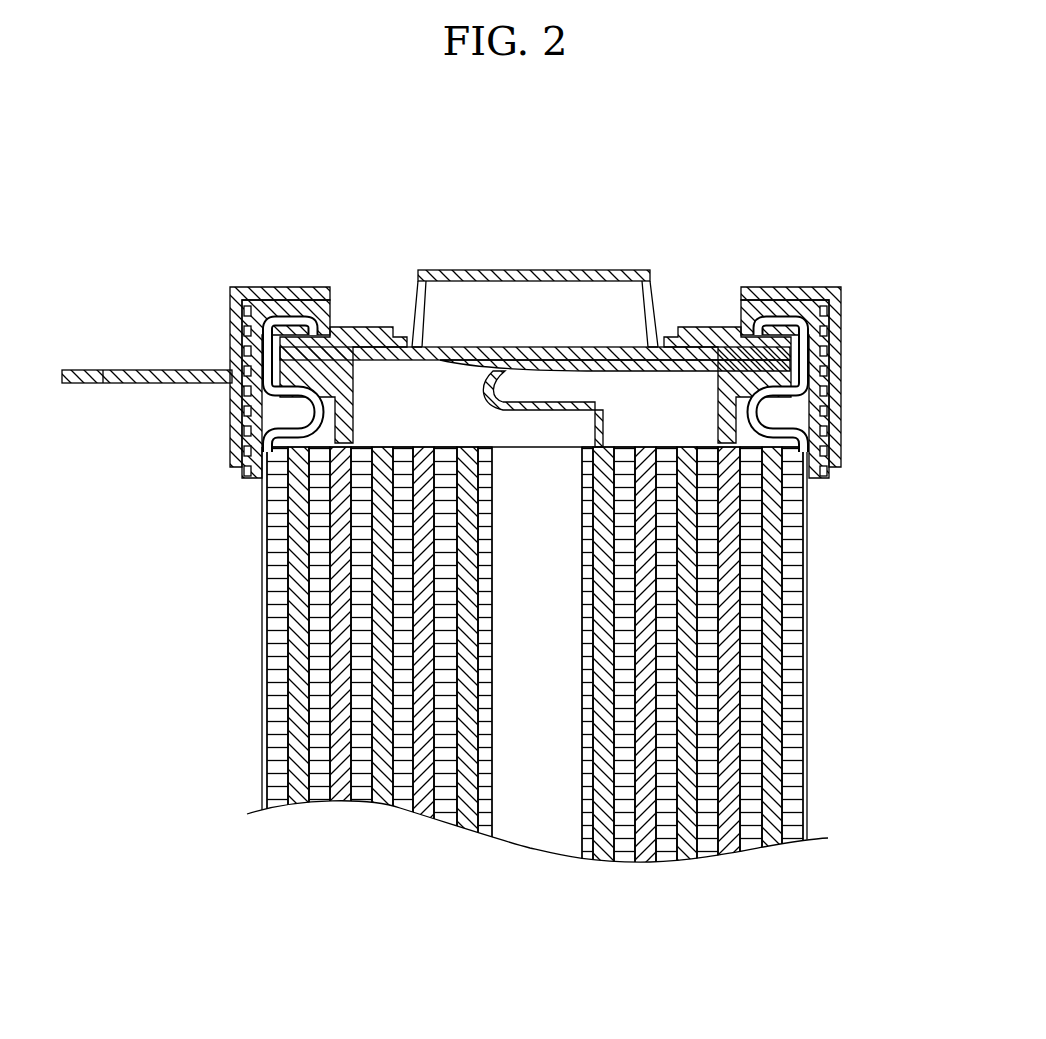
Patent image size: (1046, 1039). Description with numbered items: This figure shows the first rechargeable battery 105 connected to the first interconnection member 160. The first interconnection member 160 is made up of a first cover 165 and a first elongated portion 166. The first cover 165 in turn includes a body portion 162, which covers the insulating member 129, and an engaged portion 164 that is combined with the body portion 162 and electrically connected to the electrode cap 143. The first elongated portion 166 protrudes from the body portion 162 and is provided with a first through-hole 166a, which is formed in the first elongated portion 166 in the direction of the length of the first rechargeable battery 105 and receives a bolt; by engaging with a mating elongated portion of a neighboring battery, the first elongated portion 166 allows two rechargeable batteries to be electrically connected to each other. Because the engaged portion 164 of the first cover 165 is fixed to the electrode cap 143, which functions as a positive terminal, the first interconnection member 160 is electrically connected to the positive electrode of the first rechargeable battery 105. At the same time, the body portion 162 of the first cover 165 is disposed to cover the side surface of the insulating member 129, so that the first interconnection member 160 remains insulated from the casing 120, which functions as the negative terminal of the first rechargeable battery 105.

The first rechargeable battery 105 is at (825, 522).
The casing 120 is at (812, 620).
The insulating member 129 is at (800, 296).
The electrode cap 143 is at (548, 272).
The first interconnection member 160 is at (172, 157).
The body portion 162 is at (214, 318).
The engaged portion 164 is at (357, 330).
The first cover 165 is at (233, 196).
The first elongated portion 166 is at (162, 370).
The first through-hole 166a is at (95, 384).